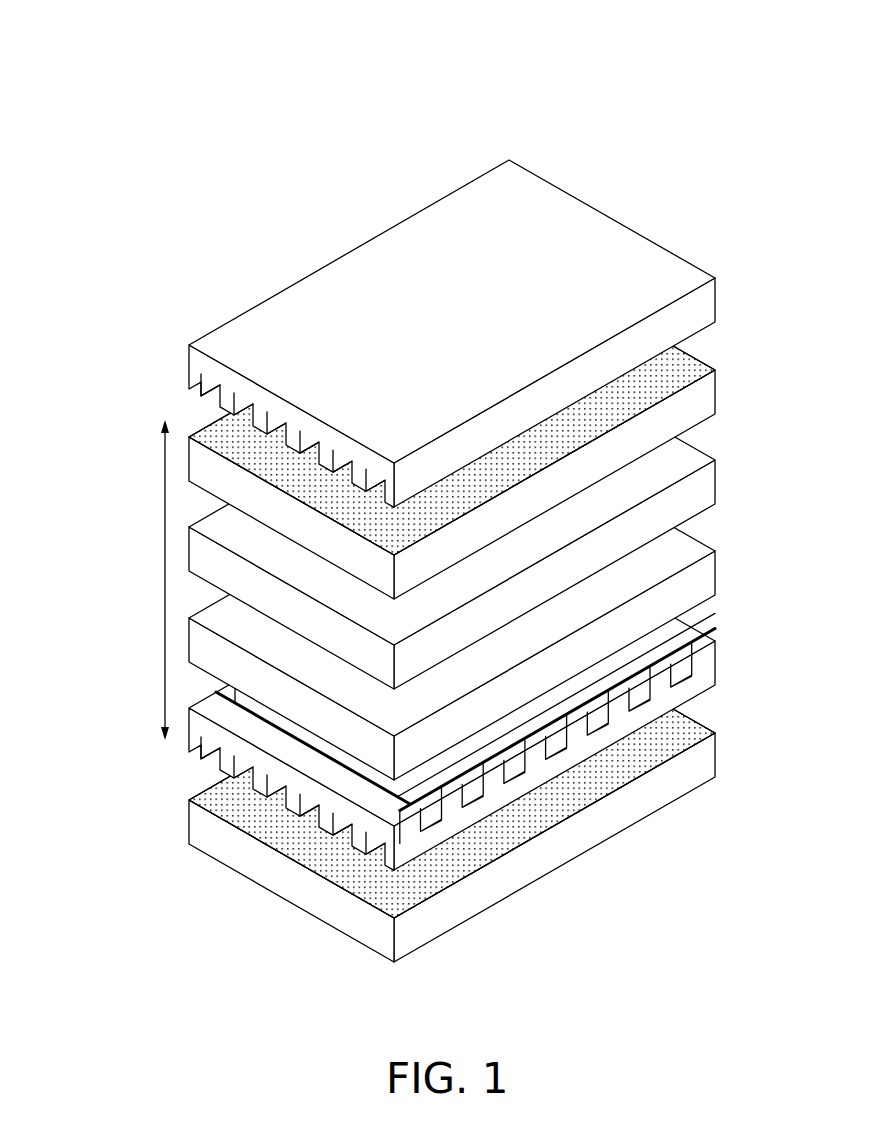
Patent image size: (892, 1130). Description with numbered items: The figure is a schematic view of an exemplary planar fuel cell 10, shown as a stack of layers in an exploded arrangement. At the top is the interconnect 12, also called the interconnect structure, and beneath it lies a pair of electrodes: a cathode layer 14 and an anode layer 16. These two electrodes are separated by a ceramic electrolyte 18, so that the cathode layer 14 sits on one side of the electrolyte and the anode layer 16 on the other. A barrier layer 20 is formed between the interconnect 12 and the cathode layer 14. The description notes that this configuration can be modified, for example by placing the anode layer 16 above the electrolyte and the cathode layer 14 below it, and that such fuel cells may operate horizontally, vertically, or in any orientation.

The planar fuel cell 10 is at (419, 494).
The interconnect 12 is at (719, 298).
The cathode layer 14 is at (719, 388).
The ceramic electrolyte 18 is at (719, 478).
The anode layer 16 is at (719, 568).
The barrier layer 20 is at (216, 440).